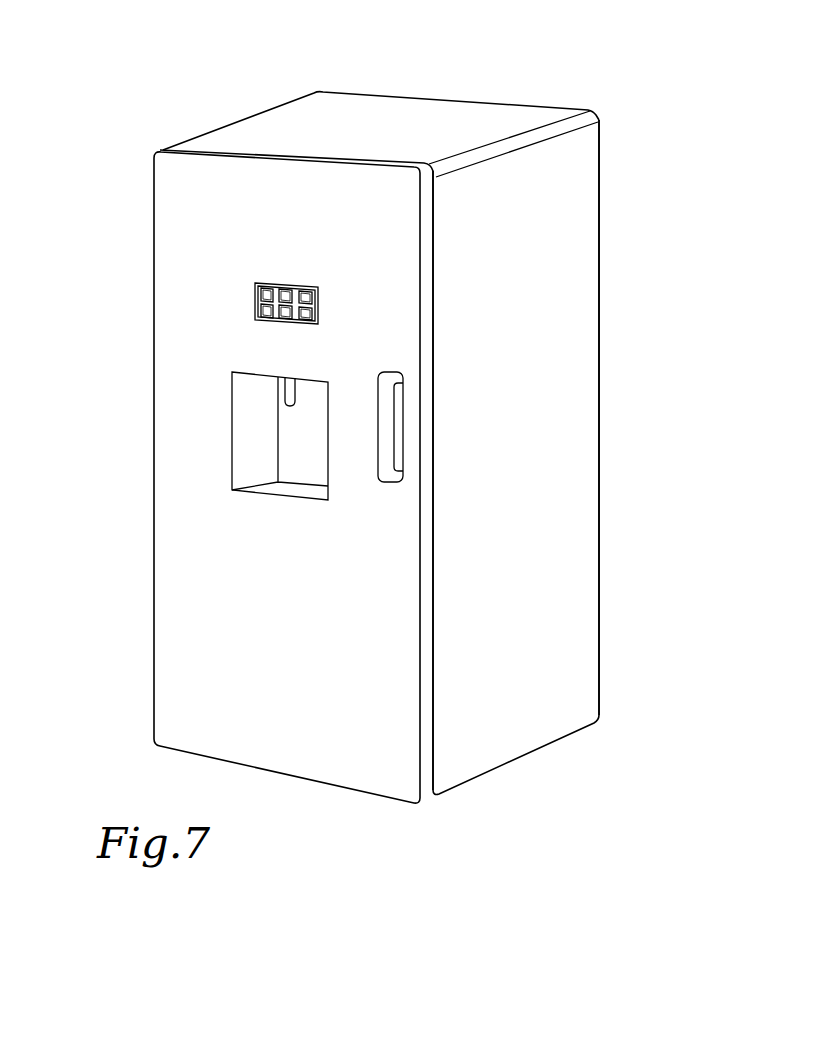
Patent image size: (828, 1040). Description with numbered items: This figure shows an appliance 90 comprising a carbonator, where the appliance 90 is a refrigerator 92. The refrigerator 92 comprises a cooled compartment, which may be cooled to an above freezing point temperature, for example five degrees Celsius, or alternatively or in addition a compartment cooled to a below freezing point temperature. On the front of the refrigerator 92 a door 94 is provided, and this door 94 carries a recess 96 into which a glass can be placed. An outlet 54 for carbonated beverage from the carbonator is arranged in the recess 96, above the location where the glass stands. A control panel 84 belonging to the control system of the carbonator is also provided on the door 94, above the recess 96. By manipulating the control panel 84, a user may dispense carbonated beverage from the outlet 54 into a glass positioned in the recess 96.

The appliance 90 is at (110, 92).
The refrigerator 92 is at (552, 414).
The door 94 is at (188, 645).
The control panel 84 is at (257, 306).
The outlet 54 is at (290, 392).
The recess 96 is at (284, 459).